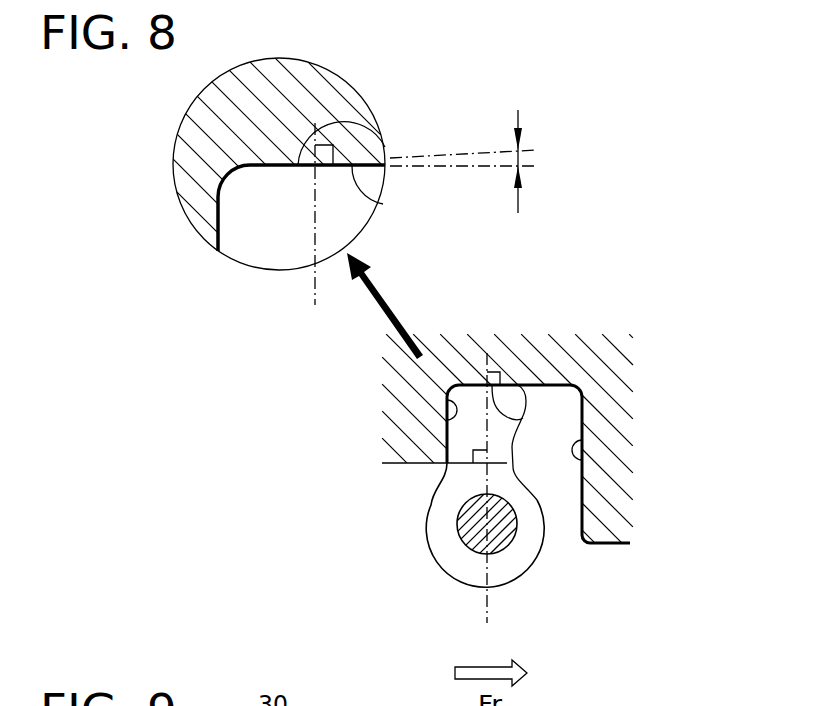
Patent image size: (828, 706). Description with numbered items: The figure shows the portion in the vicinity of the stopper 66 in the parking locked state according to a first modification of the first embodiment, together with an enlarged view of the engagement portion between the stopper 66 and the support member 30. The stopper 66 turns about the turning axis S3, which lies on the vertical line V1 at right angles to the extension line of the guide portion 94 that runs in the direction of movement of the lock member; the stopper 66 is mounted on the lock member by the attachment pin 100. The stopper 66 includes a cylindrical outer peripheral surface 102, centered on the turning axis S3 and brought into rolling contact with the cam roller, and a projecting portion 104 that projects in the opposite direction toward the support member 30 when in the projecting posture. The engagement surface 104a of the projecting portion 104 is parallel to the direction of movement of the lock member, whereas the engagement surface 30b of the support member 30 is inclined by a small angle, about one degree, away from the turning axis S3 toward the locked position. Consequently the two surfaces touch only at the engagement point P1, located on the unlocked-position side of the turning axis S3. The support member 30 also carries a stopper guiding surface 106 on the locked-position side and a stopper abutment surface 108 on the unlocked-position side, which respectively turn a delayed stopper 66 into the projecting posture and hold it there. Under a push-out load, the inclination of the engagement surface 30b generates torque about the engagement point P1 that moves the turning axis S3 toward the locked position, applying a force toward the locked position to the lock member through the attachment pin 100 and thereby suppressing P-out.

The support member 30 is at (272, 77).
The engagement surface 30b is at (383, 204).
The stopper 66 is at (543, 372).
The guide portion 94 is at (400, 465).
The attachment pin 100 is at (465, 517).
The cylindrical outer peripheral surface 102 is at (452, 573).
The projecting portion 104 is at (263, 247).
The engagement surface 104a is at (352, 99).
The stopper guiding surface 106 is at (583, 459).
The stopper abutment surface 108 is at (445, 396).
The engagement point P1 is at (194, 101).
The turning axis S3 is at (505, 548).
The vertical line V1 is at (402, 390).